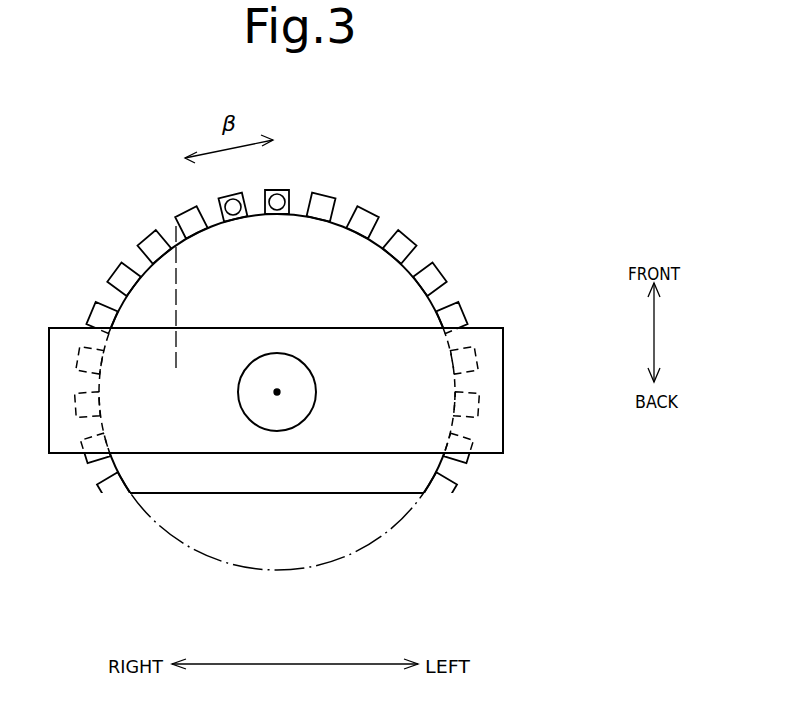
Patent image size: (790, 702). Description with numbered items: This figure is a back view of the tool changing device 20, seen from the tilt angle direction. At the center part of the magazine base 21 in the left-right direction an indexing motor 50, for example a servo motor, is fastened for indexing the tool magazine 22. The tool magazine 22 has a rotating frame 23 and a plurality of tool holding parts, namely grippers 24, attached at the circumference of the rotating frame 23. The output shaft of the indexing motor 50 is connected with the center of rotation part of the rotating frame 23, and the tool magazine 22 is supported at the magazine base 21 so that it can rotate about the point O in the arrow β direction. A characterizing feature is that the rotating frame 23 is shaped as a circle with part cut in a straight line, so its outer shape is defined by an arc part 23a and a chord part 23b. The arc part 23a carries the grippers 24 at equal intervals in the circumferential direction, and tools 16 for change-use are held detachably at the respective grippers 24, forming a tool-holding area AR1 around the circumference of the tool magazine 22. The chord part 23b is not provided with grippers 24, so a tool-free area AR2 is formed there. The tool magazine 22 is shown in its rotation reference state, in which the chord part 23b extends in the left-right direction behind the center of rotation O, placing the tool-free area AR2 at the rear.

The tool 16 is at (268, 188).
The tool changing device 20 is at (510, 192).
The magazine base 21 is at (492, 454).
The tool magazine 22 is at (345, 215).
The rotating frame 23 is at (316, 349).
The arc part 23a is at (412, 262).
The chord part 23b is at (177, 494).
The gripper 24 is at (370, 217).
The indexing motor 50 is at (303, 400).
The center of rotation O is at (277, 392).
The tool-holding area AR1 is at (166, 222).
The tool-free area AR2 is at (367, 518).